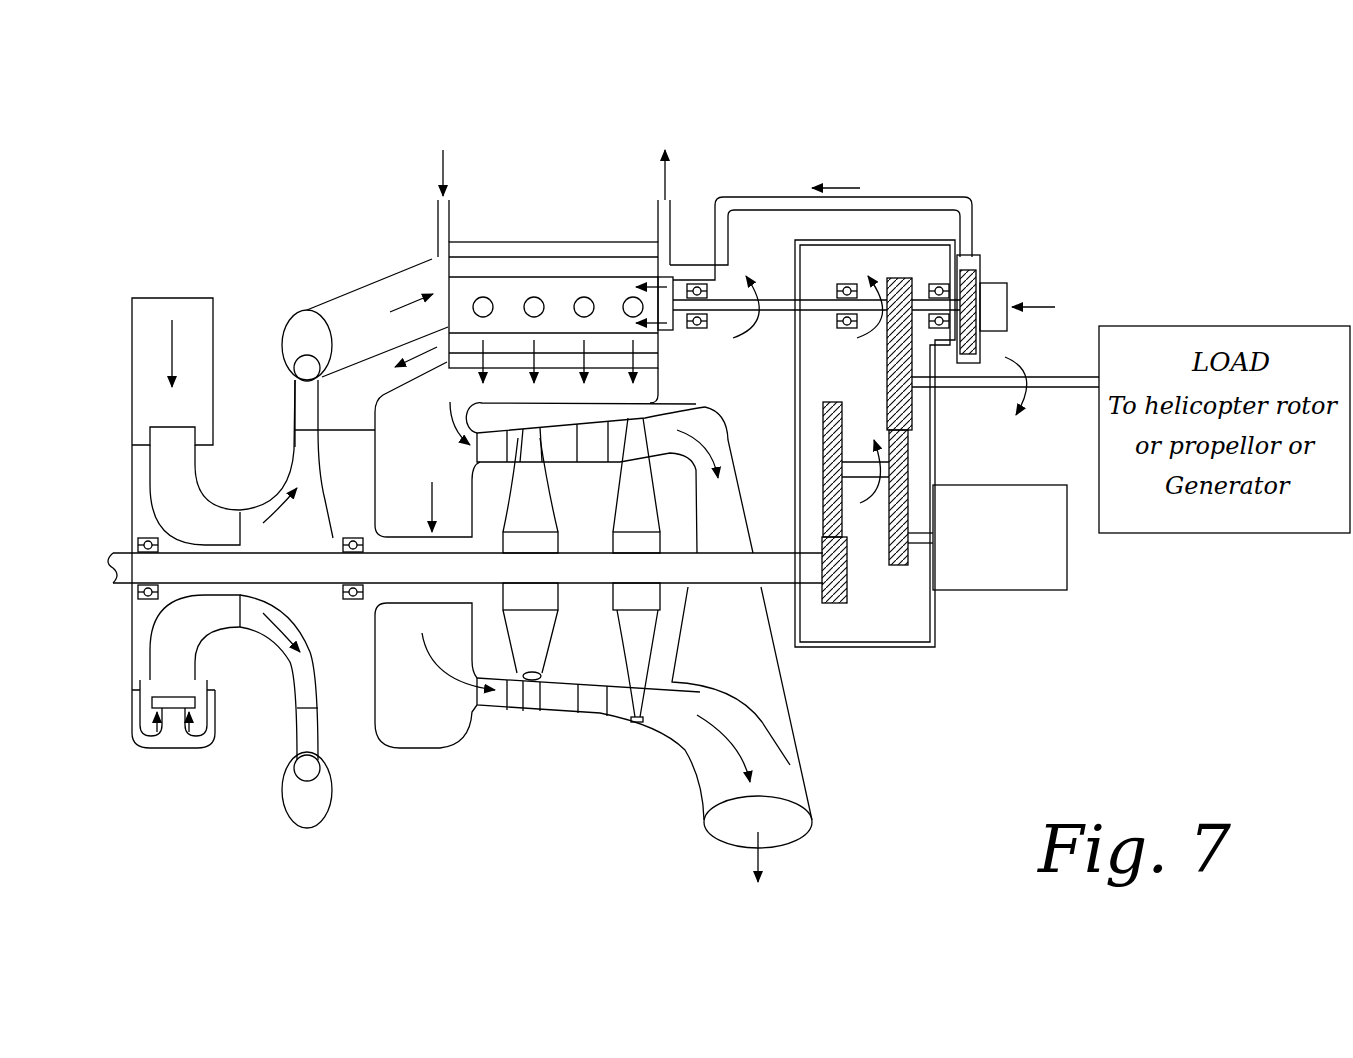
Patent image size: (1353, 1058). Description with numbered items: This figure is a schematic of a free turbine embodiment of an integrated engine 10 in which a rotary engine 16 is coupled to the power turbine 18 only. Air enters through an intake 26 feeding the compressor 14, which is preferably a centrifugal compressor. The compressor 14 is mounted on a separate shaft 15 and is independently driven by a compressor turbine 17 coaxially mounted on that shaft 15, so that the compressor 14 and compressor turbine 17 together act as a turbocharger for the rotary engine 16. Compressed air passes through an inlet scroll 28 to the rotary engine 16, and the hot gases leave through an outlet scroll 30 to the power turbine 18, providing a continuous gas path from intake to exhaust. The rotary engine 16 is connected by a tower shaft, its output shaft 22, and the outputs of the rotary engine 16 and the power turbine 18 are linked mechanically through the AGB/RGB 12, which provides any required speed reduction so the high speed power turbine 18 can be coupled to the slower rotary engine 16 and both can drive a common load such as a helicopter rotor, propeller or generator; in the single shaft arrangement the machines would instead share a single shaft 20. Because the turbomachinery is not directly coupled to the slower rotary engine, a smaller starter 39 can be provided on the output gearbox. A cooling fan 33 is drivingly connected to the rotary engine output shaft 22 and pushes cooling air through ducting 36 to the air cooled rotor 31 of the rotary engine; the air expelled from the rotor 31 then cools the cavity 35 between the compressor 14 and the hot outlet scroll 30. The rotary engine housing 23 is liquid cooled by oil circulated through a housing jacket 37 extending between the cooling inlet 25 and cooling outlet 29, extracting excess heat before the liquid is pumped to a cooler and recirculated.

The engine 10 is at (90, 318).
The AGB/RGB 12 is at (900, 652).
The compressor 14 is at (258, 632).
The shaft 15 is at (392, 574).
The rotary engine 16 is at (447, 265).
The compressor turbine 17 is at (532, 697).
The power turbine 18 is at (637, 722).
The shaft 20 is at (727, 573).
The rotary engine output shaft 22 is at (772, 309).
The housing 23 is at (484, 240).
The cooling inlet 25 is at (433, 257).
The intake 26 is at (172, 272).
The inlet scroll 28 is at (348, 288).
The cooling outlet 29 is at (666, 199).
The outlet scroll 30 is at (418, 750).
The rotor 31 is at (610, 318).
The cooling fan 33 is at (985, 290).
The cavity 35 is at (349, 402).
The ducting 36 is at (942, 202).
The housing jacket 37 is at (608, 240).
The starter 39 is at (1057, 592).